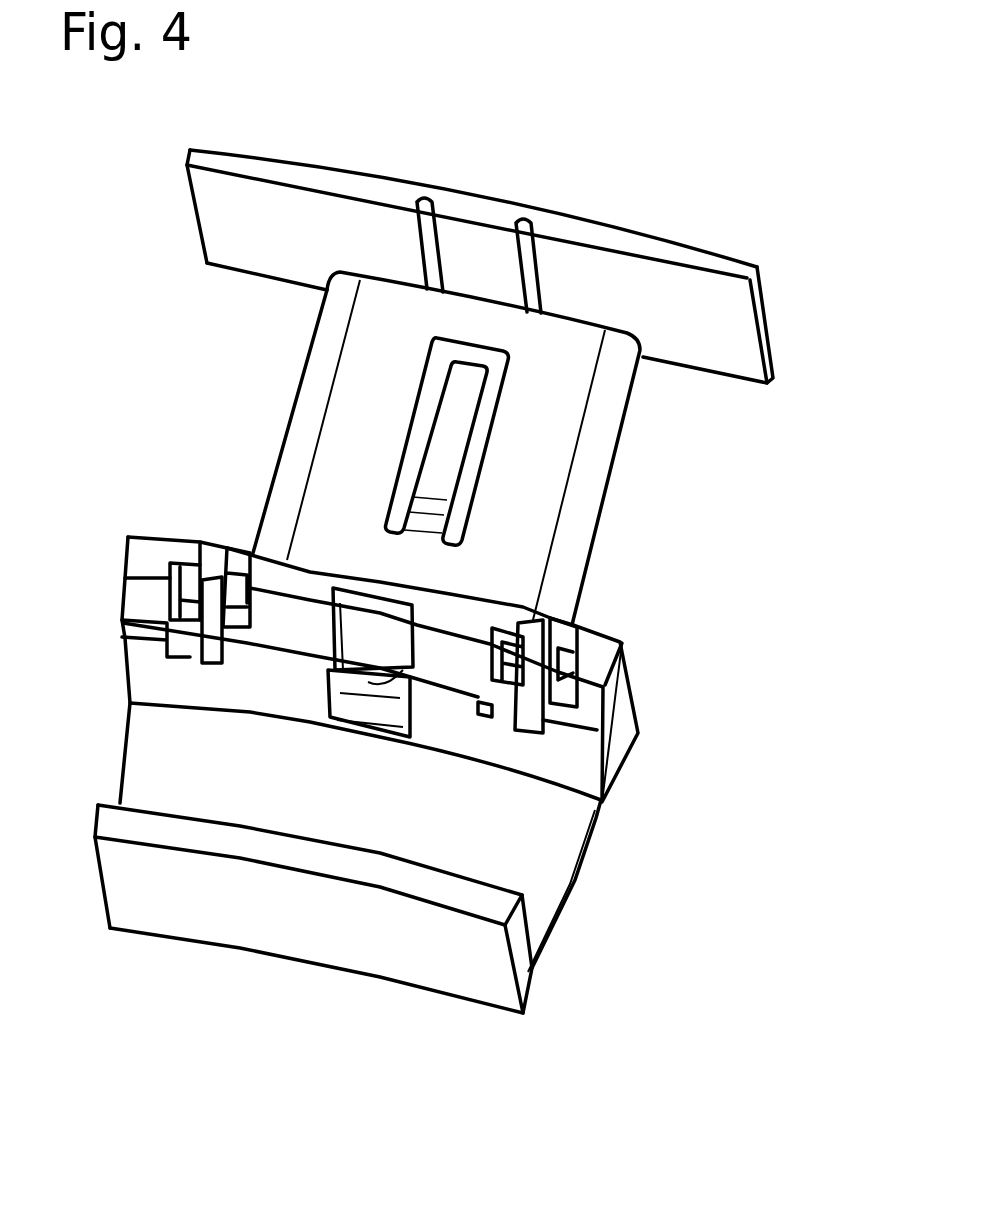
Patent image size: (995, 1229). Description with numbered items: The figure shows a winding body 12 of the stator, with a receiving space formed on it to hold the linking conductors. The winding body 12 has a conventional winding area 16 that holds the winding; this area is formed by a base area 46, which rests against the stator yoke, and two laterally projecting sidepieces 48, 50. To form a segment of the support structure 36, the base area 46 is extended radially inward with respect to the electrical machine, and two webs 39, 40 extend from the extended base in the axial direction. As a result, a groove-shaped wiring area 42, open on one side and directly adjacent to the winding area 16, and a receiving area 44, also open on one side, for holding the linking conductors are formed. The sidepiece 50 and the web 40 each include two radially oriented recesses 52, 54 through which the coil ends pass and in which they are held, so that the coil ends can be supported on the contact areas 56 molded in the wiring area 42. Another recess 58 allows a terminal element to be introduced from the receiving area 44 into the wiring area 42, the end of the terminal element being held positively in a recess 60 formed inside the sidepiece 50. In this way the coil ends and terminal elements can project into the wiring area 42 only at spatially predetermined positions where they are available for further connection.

The winding body 12 is at (768, 610).
The winding area 16 is at (653, 737).
The support structure 36 is at (713, 860).
The web 39 is at (92, 813).
The web 40 is at (123, 650).
The wiring area 42 is at (652, 737).
The receiving area 44 is at (533, 1022).
The base area 46 is at (293, 400).
The sidepiece 48 is at (580, 230).
The sidepiece 50 is at (123, 537).
The recess 52 is at (210, 577).
The recess 54 is at (165, 648).
The contact area 56 is at (200, 663).
The recess 58 is at (377, 707).
The recess 60 is at (363, 633).